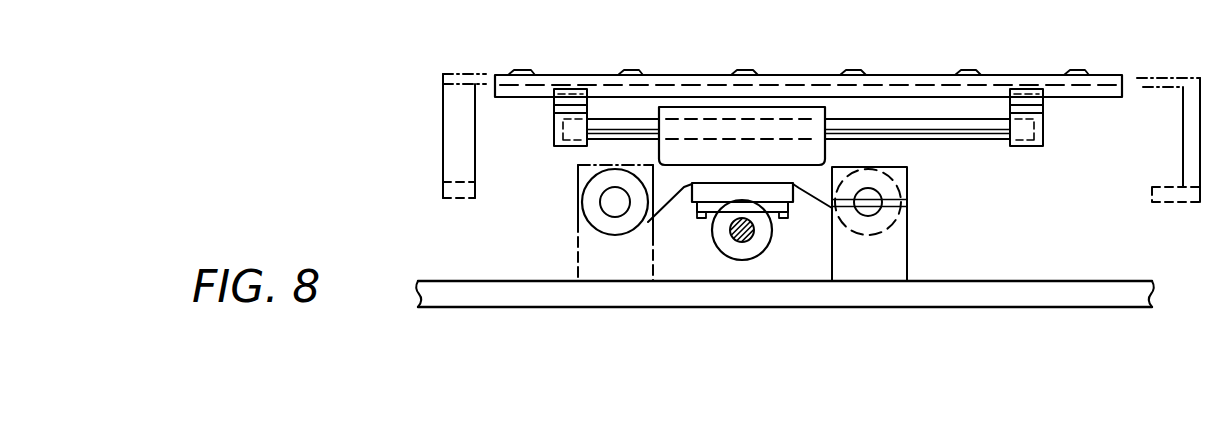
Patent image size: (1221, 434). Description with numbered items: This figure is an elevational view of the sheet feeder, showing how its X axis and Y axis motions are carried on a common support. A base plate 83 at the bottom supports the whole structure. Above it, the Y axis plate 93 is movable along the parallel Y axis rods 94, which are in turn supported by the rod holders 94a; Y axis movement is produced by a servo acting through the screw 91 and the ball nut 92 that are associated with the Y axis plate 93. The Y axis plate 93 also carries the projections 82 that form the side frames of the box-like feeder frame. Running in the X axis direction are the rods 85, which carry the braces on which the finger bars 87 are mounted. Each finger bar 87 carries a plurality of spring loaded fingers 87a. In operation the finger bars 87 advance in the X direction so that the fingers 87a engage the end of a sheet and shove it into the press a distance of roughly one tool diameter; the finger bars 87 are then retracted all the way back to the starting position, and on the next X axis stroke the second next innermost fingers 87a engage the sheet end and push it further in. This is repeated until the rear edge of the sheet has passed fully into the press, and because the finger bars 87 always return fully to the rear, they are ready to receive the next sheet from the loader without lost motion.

The side frame member 82 is at (1083, 100).
The base plate 83 is at (975, 295).
The rod 85 is at (983, 125).
The finger bar 87 is at (578, 75).
The spring loaded finger 87a is at (631, 72).
The screw 91 is at (757, 240).
The ball nut 92 is at (727, 247).
The Y axis plate 93 is at (827, 157).
The Y axis rod 94 is at (602, 204).
The rod holder 94a is at (597, 263).